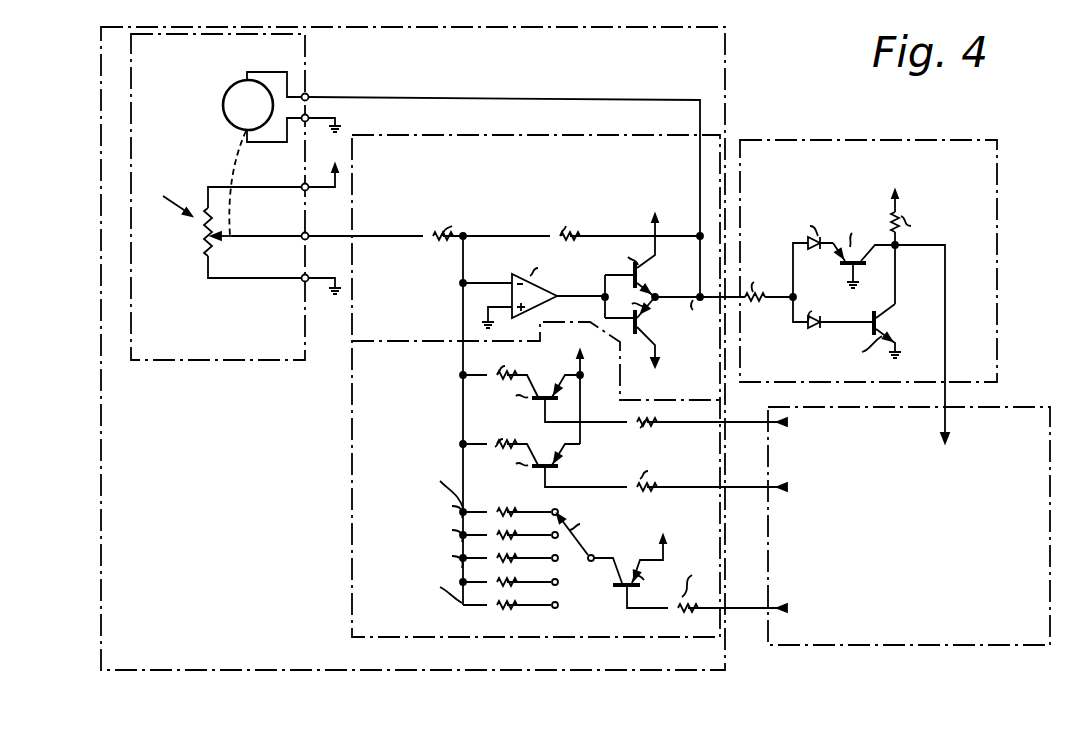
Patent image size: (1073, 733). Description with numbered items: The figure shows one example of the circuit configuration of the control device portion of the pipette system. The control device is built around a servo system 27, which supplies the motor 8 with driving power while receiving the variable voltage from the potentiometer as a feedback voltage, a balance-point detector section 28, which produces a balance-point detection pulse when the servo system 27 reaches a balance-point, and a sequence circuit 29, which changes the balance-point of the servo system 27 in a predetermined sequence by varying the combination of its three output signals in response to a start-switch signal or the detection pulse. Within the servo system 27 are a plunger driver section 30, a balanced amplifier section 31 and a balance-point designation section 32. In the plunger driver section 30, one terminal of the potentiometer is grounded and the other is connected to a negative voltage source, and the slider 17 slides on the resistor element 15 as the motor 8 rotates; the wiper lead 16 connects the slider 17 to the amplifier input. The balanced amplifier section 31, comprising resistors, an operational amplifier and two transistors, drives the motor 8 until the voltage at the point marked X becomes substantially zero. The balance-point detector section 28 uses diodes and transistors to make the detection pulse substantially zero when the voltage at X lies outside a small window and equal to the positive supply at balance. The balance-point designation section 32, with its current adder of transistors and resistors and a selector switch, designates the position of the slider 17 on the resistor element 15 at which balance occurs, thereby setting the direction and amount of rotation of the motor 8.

The motor 8 is at (219, 110).
The resistor element 15 is at (204, 239).
The wiper lead 16 is at (252, 235).
The slider 17 is at (224, 240).
The servo system 27 is at (262, 677).
The balance-point detector section 28 is at (815, 140).
The sequence circuit 29 is at (1030, 406).
The plunger driver section 30 is at (307, 50).
The balanced amplifier section 31 is at (470, 134).
The balance-point designation section 32 is at (350, 522).